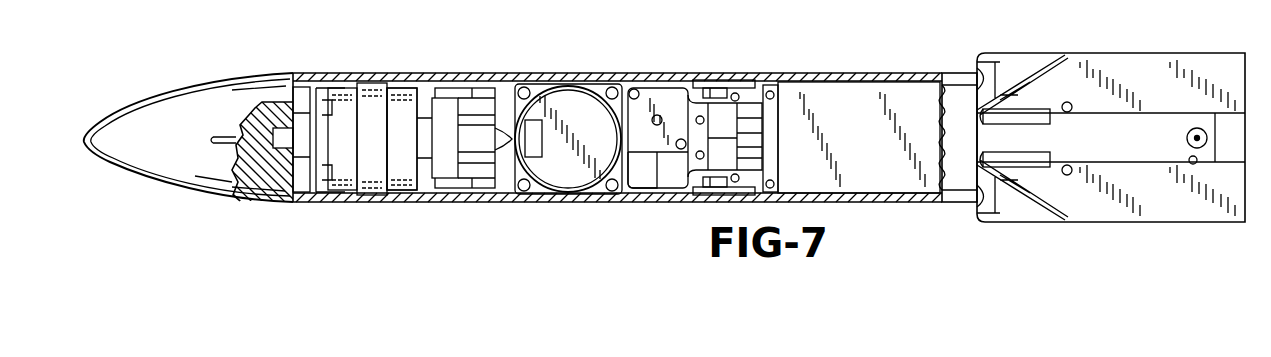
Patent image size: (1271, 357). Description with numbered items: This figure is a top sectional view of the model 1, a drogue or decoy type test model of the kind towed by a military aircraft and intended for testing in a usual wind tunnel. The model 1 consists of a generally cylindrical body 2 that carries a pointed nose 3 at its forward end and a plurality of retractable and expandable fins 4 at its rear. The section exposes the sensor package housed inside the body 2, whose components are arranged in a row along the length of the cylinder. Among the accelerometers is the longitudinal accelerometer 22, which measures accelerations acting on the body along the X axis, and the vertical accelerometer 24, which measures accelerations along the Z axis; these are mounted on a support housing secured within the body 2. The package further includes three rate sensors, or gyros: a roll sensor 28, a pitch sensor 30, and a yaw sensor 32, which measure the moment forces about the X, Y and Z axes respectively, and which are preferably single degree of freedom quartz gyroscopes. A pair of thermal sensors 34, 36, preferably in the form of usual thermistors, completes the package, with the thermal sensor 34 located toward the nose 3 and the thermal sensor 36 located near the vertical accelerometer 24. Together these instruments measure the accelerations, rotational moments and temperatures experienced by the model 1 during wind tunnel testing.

The model 1 is at (910, 60).
The body 2 is at (808, 73).
The pointed nose 3 is at (118, 120).
The fins 4 is at (1138, 75).
The longitudinal accelerometer 22 is at (453, 170).
The vertical accelerometer 24 is at (665, 103).
The roll sensor 28 is at (578, 102).
The pitch sensor 30 is at (400, 177).
The yaw sensor 32 is at (343, 178).
The thermal sensor 34 is at (283, 142).
The thermal sensor 36 is at (647, 177).